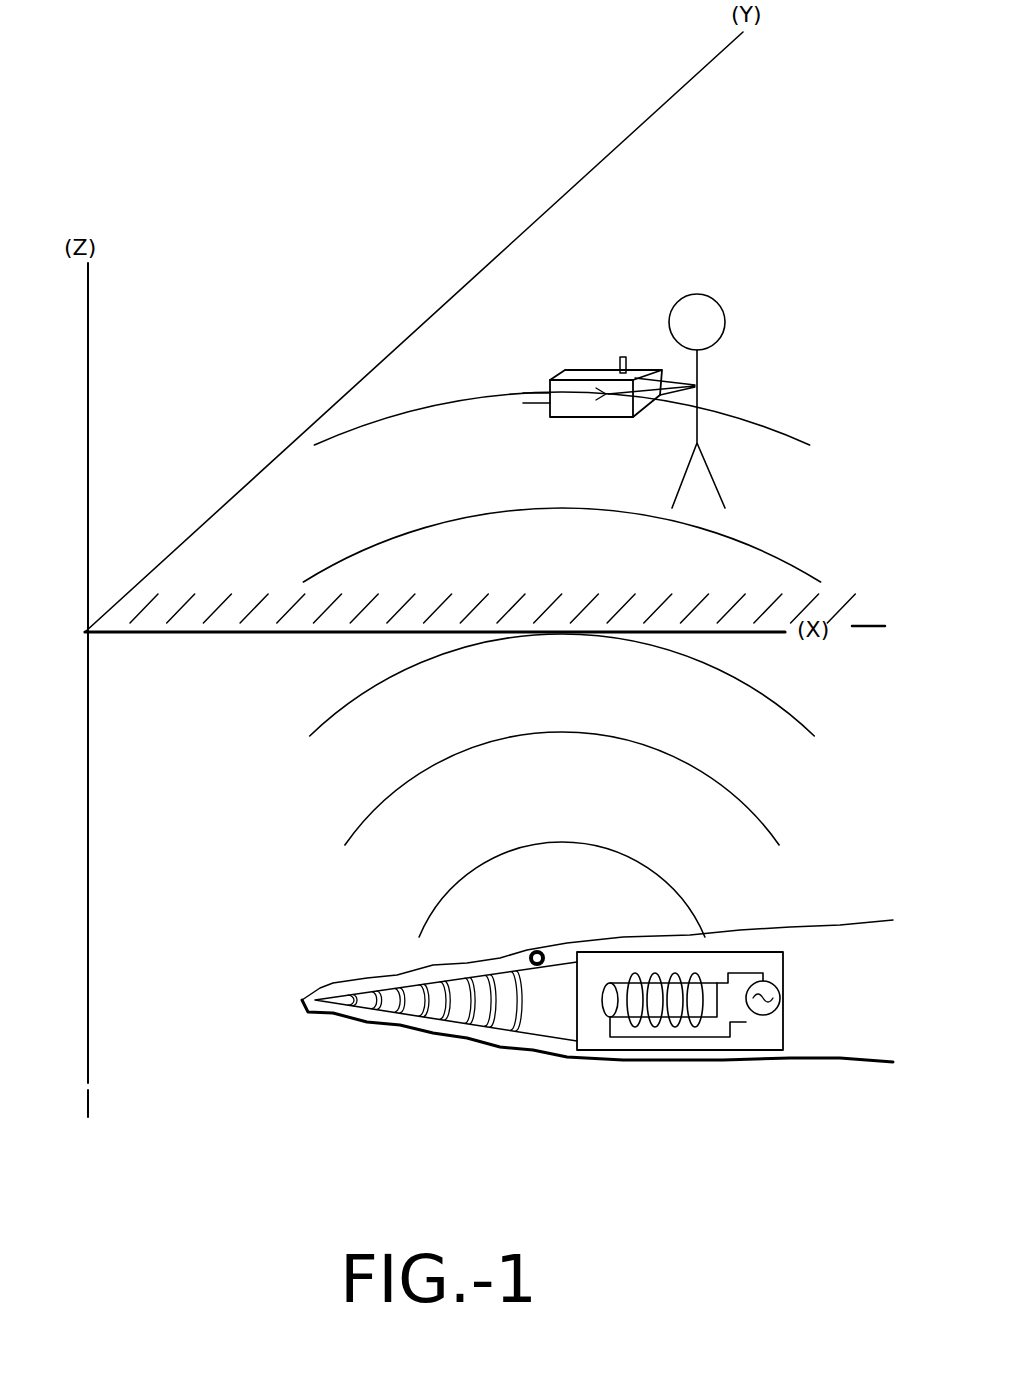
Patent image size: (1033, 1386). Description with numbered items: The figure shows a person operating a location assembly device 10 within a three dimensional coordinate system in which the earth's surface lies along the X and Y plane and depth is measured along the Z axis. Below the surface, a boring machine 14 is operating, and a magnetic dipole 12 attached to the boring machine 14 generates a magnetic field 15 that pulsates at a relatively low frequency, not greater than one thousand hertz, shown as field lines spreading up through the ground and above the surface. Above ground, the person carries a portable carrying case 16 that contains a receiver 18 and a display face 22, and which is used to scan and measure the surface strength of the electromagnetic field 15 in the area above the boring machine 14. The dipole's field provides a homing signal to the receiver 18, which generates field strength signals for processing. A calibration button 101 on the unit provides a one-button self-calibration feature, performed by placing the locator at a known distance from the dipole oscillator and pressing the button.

The location assembly device 10 is at (279, 852).
The magnetic dipole 12 is at (550, 947).
The boring machine 14 is at (787, 973).
The magnetic field 15 is at (350, 697).
The portable carrying case 16 is at (552, 446).
The receiver 18 is at (534, 380).
The display face 22 is at (584, 336).
The calibration button 101 is at (633, 362).